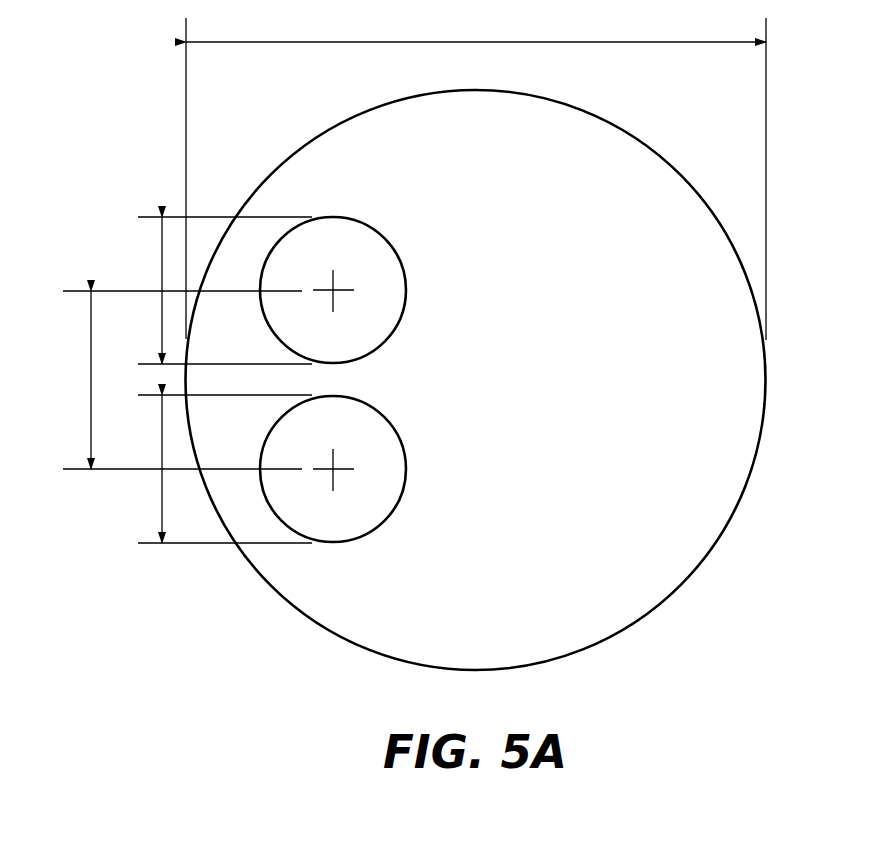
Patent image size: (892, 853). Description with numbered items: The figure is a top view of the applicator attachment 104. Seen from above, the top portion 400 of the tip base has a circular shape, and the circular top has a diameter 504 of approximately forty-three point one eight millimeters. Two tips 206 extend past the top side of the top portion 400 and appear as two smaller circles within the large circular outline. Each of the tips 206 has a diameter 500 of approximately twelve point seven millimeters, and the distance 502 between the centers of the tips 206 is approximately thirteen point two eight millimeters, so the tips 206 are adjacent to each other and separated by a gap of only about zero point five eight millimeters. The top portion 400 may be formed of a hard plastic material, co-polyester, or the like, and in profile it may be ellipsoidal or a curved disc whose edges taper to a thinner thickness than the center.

The applicator attachment 104 is at (800, 140).
The tips 206 is at (332, 219).
The top portion 400 is at (627, 148).
The diameter 500 is at (160, 282).
The distance 502 is at (91, 380).
The diameter 504 is at (475, 42).